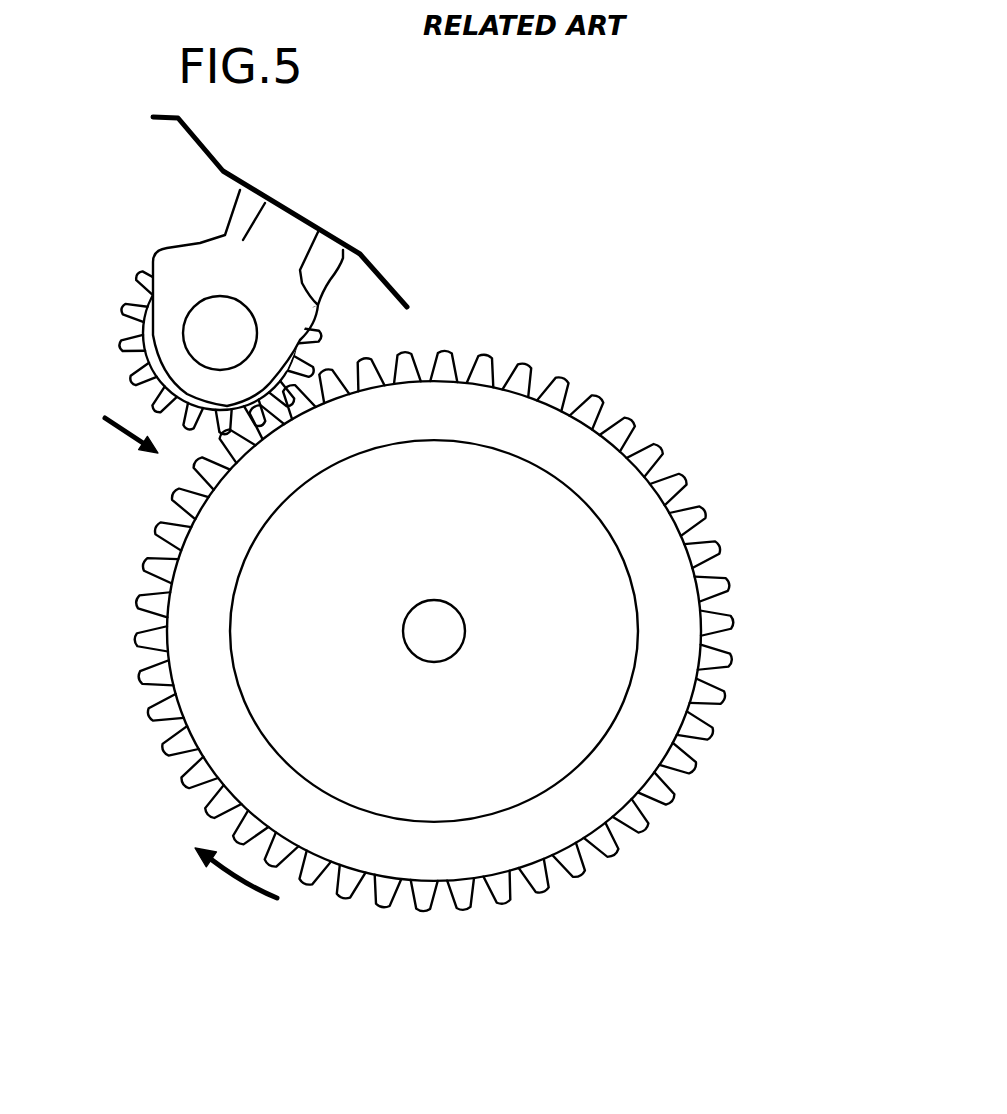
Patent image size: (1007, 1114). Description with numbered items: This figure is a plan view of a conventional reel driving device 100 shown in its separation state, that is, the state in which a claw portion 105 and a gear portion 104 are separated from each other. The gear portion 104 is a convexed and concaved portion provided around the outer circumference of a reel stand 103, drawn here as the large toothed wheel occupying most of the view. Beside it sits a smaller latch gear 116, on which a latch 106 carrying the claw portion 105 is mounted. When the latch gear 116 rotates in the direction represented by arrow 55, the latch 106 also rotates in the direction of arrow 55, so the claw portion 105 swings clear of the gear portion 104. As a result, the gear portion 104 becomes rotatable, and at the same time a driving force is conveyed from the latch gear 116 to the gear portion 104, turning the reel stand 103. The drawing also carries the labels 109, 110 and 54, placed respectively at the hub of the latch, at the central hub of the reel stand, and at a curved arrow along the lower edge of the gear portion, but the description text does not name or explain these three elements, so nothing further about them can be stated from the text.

The reel driving device 100 is at (548, 158).
The reel stand 103 is at (532, 510).
The gear portion 104 is at (672, 798).
The claw portion 105 is at (397, 283).
The latch 106 is at (270, 247).
The shaft hole 109 is at (220, 327).
The rotation shaft 110 is at (455, 632).
The latch gear 116 is at (123, 343).
The rotation direction of large gear 54 is at (227, 873).
The arrow 55 is at (118, 440).